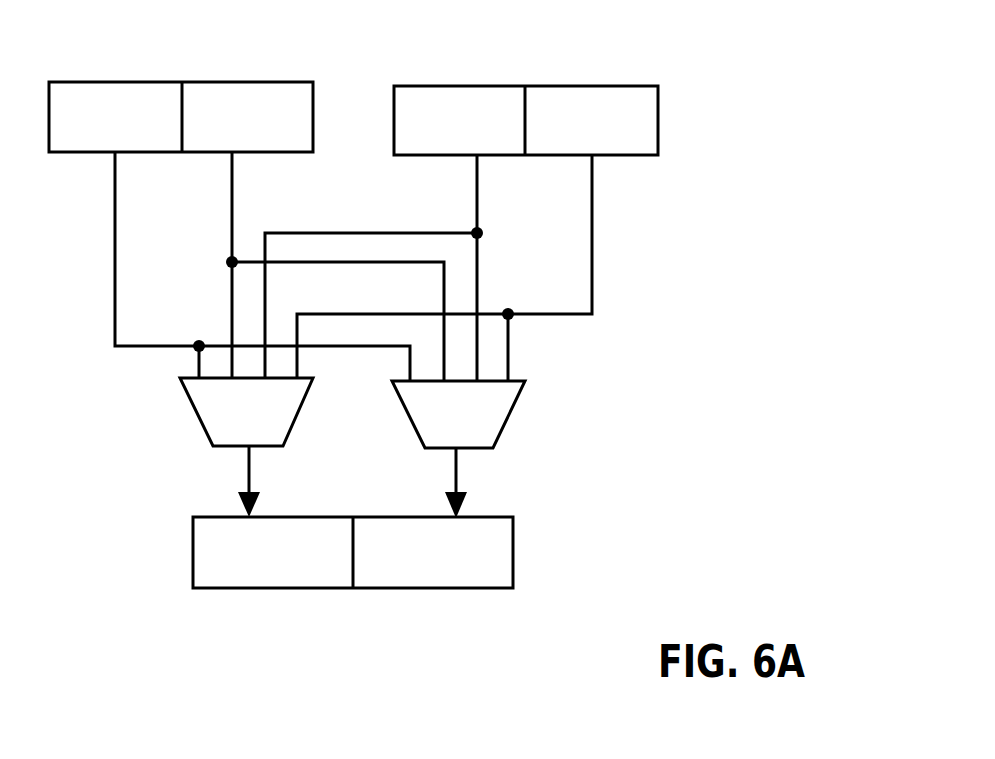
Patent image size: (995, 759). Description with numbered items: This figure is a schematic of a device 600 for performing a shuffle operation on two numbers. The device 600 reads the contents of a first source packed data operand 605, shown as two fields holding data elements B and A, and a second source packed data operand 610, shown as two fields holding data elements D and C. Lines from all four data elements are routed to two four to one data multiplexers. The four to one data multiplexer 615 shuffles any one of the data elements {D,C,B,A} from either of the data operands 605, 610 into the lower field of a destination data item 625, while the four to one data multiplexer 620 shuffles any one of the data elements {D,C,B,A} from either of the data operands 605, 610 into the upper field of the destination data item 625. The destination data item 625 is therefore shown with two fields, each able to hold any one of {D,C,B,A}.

The device 600 is at (750, 111).
The first source packed data operand 605 is at (488, 86).
The second source packed data operand 610 is at (155, 82).
The four to one data multiplexer 615 is at (525, 381).
The four to one data multiplexer 620 is at (180, 378).
The destination data item 625 is at (313, 517).